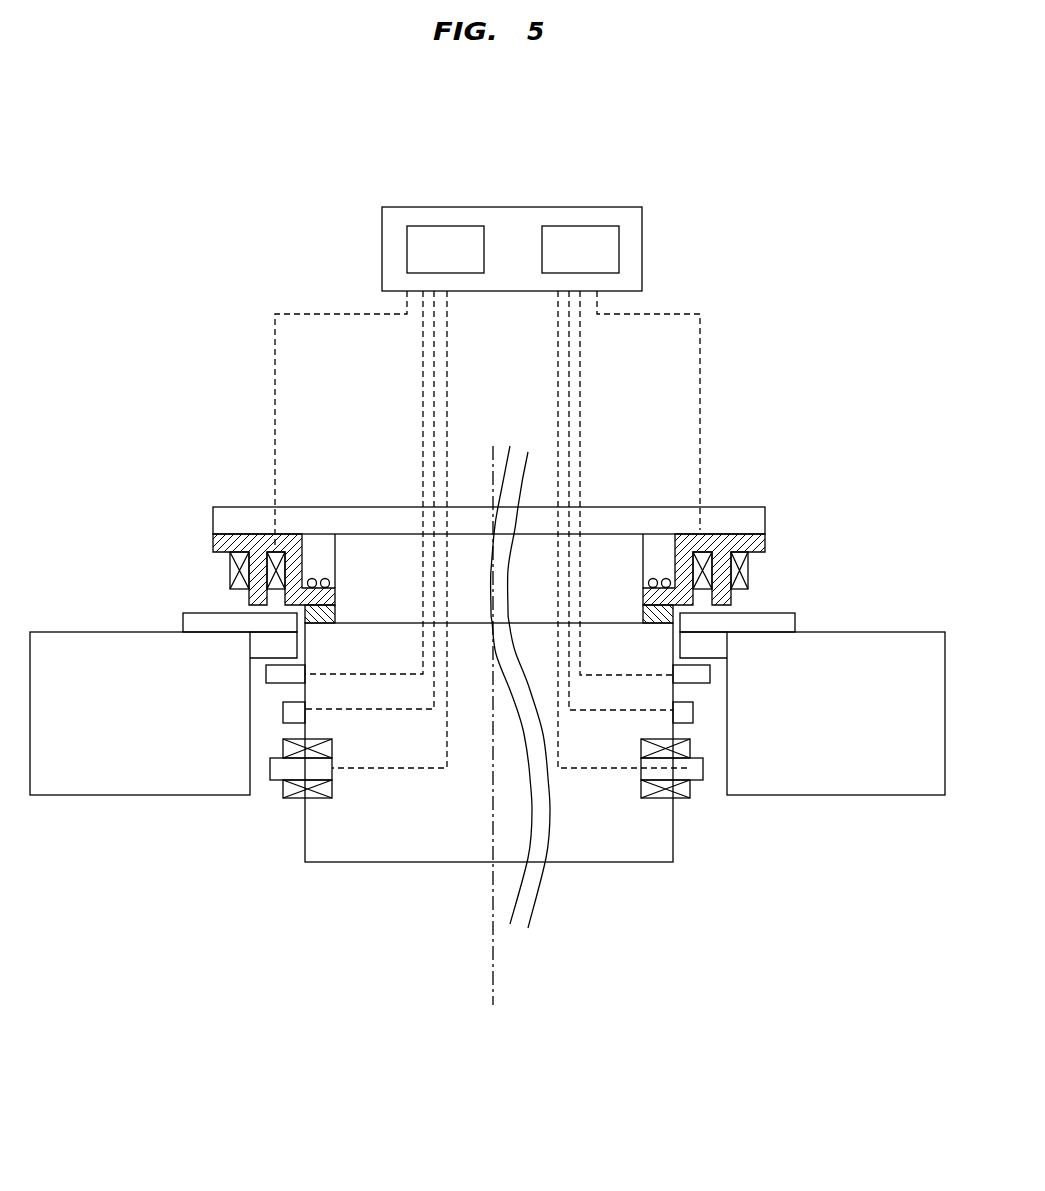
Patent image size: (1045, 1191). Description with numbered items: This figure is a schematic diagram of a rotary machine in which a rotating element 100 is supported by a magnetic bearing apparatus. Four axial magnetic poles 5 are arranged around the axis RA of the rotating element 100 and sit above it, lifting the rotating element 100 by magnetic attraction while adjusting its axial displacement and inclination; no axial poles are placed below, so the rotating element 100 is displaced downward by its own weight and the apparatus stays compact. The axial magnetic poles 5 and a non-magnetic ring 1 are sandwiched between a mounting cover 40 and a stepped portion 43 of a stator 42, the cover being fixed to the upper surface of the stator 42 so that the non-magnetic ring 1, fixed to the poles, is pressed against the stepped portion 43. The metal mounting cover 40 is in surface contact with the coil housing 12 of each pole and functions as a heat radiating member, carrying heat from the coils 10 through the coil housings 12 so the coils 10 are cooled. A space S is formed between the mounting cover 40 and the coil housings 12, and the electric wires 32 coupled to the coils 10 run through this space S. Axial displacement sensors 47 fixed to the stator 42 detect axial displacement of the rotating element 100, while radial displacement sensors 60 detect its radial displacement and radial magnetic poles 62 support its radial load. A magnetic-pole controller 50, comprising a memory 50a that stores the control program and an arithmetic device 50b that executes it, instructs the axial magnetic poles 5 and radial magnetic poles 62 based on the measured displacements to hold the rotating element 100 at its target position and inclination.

The non-magnetic ring 1 is at (330, 615).
The axial magnetic pole 5 is at (494, 498).
The coil 10 is at (228, 573).
The coil housing 12 is at (260, 543).
The electric wire 32 is at (325, 578).
The mounting cover 40 is at (390, 507).
The stator 42 is at (412, 862).
The stepped portion 43 is at (542, 620).
The axial displacement sensor 47 is at (273, 672).
The magnetic-pole controller 50 is at (505, 207).
The memory 50a is at (436, 226).
The arithmetic device 50b is at (586, 226).
The radial displacement sensor 60 is at (290, 715).
The radial magnetic pole 62 is at (298, 798).
The rotating element 100 is at (108, 795).
The space S is at (320, 557).
The axis RA is at (496, 745).